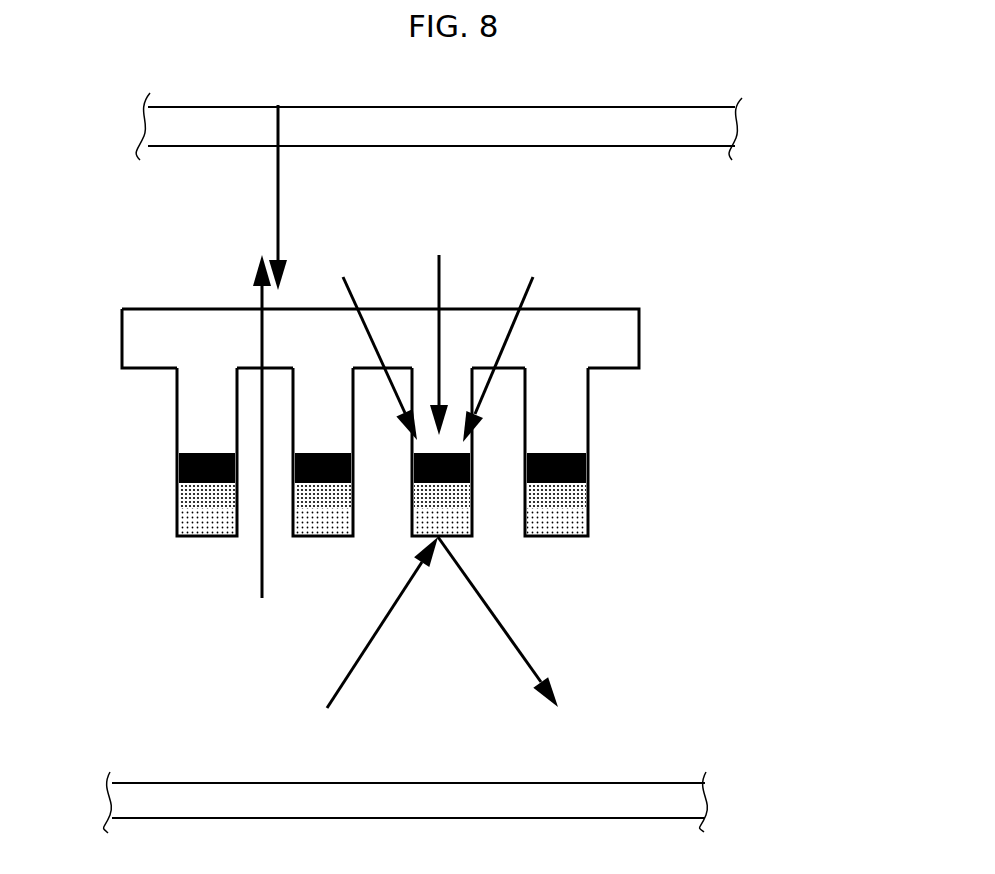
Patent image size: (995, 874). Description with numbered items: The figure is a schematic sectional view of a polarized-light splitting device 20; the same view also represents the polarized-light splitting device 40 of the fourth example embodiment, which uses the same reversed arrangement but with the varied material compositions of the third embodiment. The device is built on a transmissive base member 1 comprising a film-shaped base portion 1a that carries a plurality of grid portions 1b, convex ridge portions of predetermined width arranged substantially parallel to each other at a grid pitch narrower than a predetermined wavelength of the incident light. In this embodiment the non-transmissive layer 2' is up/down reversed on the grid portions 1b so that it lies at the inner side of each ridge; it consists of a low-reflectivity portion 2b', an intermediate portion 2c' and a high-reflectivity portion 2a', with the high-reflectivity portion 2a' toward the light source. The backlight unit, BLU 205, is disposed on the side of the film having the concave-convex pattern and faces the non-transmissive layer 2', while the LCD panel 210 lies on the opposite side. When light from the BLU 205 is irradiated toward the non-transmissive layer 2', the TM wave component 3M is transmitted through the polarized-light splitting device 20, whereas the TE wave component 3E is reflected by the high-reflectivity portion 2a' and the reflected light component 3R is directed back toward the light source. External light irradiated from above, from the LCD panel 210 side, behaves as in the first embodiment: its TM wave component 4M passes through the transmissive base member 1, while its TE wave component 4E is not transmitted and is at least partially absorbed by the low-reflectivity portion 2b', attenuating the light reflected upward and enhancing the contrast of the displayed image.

The polarized-light splitting device 20 is at (126, 247).
The polarized-light splitting device 40 is at (146, 189).
The LCD panel 210 is at (724, 121).
The BLU 205 is at (696, 803).
The transmissive base member 1 is at (448, 422).
The film-shaped base portion 1a is at (630, 337).
The grid portions 1b is at (587, 415).
The non-transmissive layer 2' is at (514, 485).
The low-reflectivity portion 2b' is at (462, 461).
The intermediate portion 2c' is at (461, 491).
The high-reflectivity portion 2a' is at (462, 522).
The TM wave component 4M is at (282, 133).
The TM wave component 3M is at (266, 590).
The TE wave component 4E is at (542, 322).
The TE wave component 3E is at (340, 688).
The reflected light component 3R is at (523, 660).